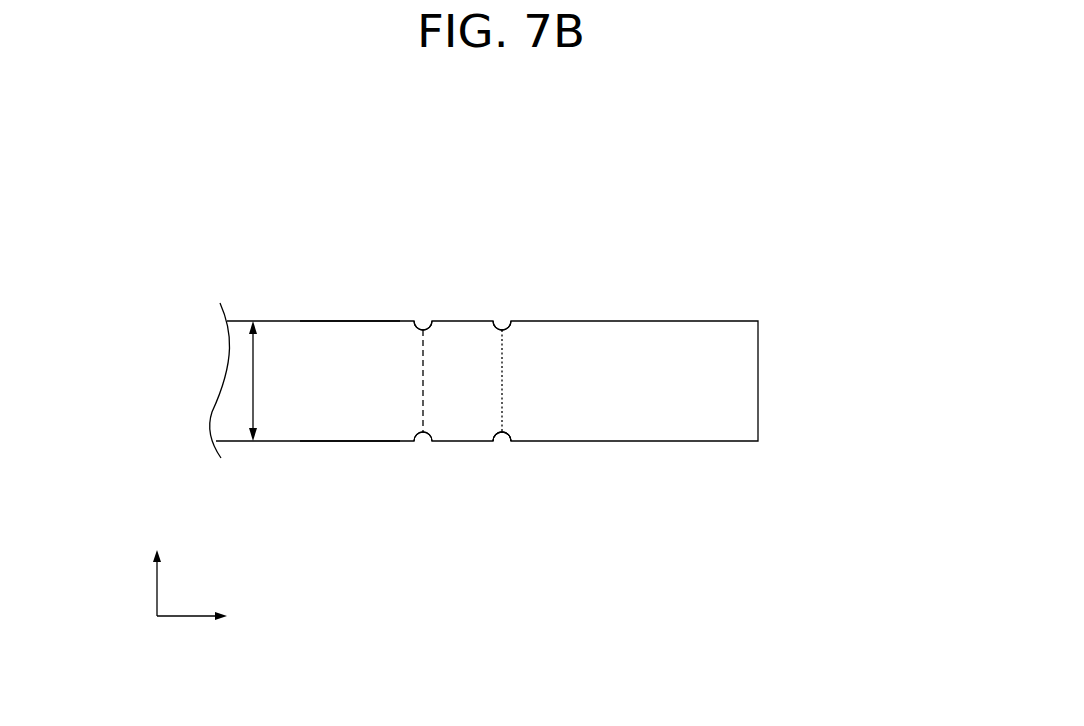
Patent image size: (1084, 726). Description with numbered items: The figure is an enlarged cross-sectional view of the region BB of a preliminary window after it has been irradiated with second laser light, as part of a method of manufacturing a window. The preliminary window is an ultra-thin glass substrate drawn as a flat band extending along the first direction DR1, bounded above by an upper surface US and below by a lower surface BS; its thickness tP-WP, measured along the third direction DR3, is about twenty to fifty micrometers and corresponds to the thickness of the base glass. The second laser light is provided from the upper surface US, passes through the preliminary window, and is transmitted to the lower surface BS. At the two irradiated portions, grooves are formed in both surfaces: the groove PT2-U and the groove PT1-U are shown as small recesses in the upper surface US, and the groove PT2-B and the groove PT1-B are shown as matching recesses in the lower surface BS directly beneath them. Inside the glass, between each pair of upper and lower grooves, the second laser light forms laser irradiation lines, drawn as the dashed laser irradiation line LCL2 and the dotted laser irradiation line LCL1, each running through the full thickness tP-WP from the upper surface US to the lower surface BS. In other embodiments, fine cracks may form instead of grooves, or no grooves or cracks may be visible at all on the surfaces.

The region BB is at (697, 222).
The upper surface US is at (334, 315).
The lower surface BS is at (341, 448).
The groove PT2-U is at (424, 314).
The groove PT1-U is at (506, 314).
The groove PT2-B is at (424, 448).
The groove PT1-B is at (506, 448).
The laser irradiation line LCL2 is at (416, 357).
The laser irradiation line LCL1 is at (509, 357).
The thickness of the preliminary window tP-WP is at (277, 381).
The third direction DR3 is at (156, 568).
The first direction DR1 is at (212, 617).